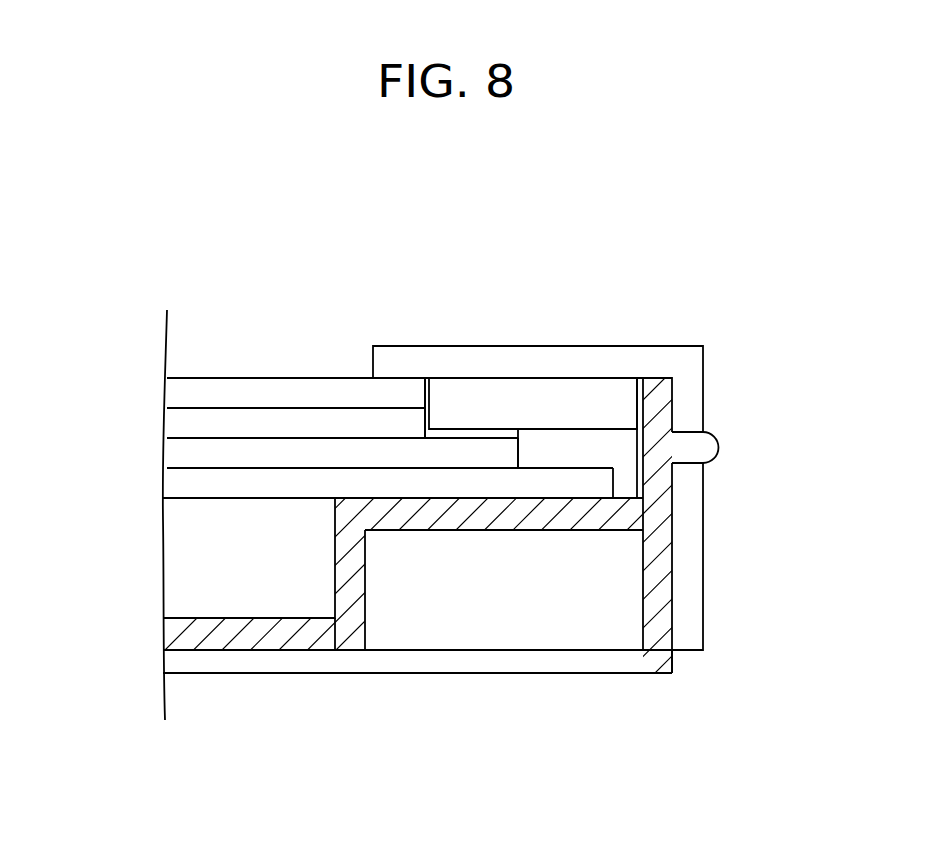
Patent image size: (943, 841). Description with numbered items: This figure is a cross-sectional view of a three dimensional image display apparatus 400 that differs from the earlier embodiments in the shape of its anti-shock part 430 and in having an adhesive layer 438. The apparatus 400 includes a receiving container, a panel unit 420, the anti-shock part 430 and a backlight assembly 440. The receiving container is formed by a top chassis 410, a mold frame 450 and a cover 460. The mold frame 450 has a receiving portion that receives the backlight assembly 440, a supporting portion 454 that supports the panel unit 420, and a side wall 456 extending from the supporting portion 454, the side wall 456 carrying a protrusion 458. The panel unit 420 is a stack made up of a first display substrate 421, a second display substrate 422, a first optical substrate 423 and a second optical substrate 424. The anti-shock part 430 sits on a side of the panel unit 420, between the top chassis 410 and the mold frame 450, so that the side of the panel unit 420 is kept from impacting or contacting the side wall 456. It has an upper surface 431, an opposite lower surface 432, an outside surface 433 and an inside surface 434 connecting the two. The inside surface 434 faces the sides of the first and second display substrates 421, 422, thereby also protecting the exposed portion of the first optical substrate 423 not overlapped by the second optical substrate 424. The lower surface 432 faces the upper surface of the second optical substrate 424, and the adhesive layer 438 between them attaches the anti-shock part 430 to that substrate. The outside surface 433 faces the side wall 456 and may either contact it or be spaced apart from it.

The three dimensional image display apparatus 400 is at (703, 692).
The top chassis 410 is at (692, 369).
The panel unit 420 is at (80, 382).
The first display substrate 421 is at (177, 425).
The second display substrate 422 is at (177, 395).
The first optical substrate 423 is at (177, 485).
The second optical substrate 424 is at (177, 457).
The anti-shock part 430 is at (592, 396).
The upper surface 431 is at (618, 382).
The lower surface 432 is at (533, 430).
The outside surface 433 is at (643, 408).
The inside surface 434 is at (423, 392).
The adhesive layer 438 is at (471, 430).
The backlight assembly 440 is at (177, 563).
The mold frame 450 is at (790, 437).
The supporting portion 454 is at (600, 515).
The side wall 456 is at (665, 485).
The protrusion 458 is at (708, 448).
The cover 460 is at (495, 663).